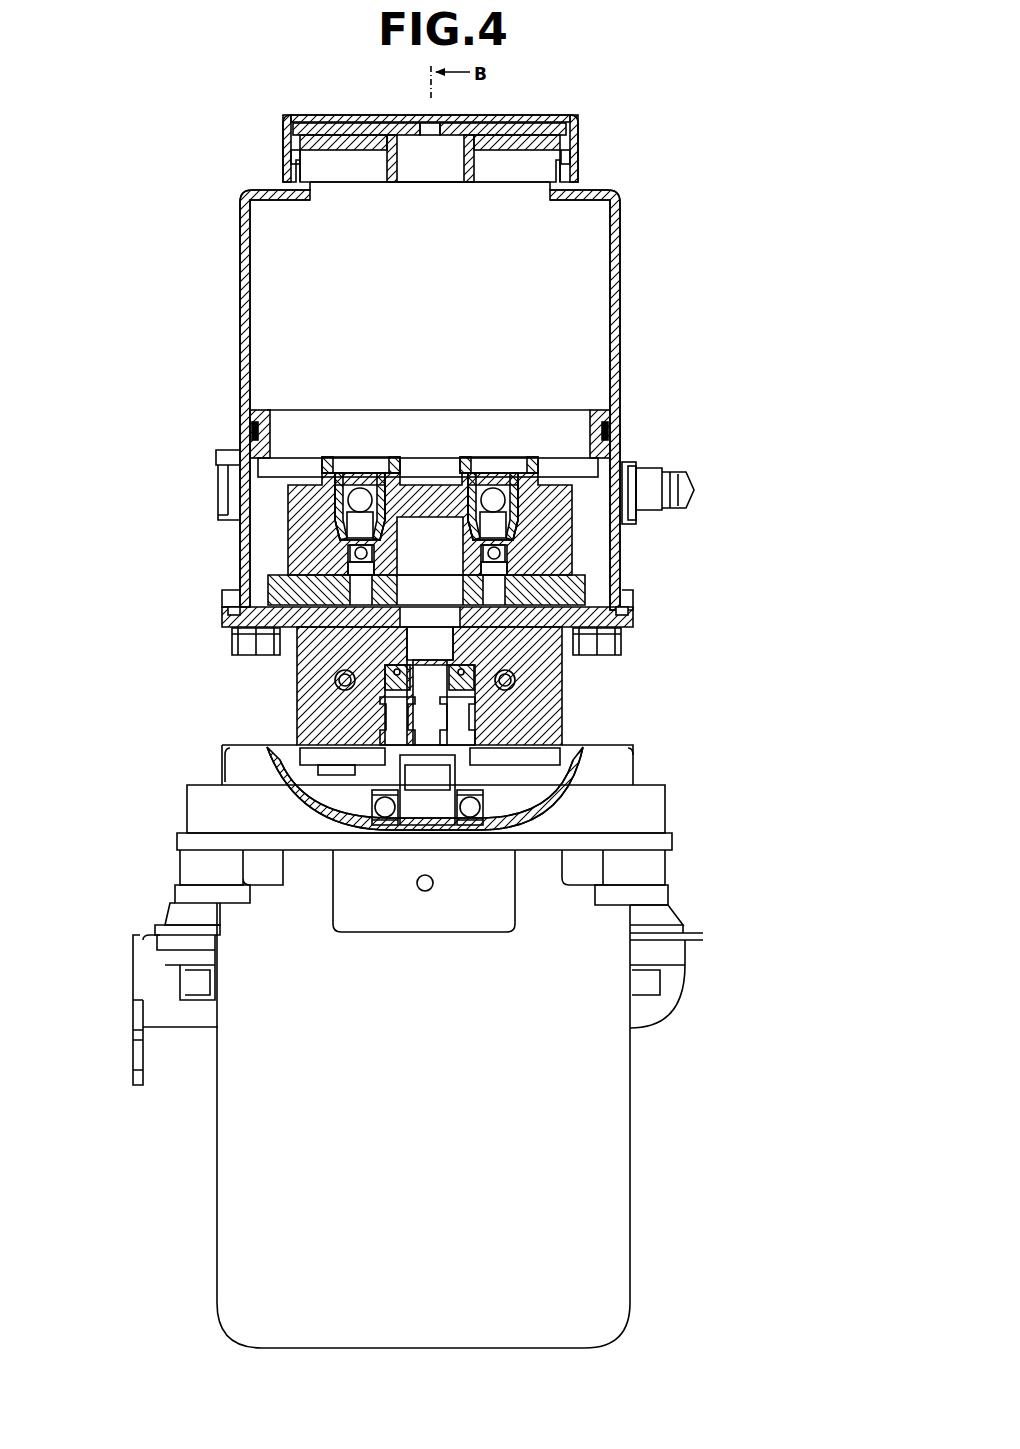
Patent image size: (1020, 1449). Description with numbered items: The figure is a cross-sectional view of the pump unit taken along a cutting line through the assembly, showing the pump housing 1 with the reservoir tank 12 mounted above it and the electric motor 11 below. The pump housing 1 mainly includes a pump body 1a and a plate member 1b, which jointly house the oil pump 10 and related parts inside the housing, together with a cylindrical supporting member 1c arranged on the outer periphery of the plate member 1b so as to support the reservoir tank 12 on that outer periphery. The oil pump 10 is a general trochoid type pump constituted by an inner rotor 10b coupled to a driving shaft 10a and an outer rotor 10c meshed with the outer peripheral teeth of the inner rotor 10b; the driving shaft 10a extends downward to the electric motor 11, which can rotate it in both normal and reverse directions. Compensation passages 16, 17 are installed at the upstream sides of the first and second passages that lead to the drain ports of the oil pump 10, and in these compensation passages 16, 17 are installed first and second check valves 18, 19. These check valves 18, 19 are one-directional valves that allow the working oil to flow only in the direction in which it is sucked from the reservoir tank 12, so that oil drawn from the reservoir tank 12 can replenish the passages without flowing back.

The pump housing 1 is at (449, 602).
The pump body 1a is at (545, 718).
The plate member 1b is at (300, 510).
The cylindrical supporting member 1c is at (612, 460).
The oil pump 10 is at (596, 598).
The driving shaft 10a is at (413, 637).
The inner rotor 10b is at (470, 628).
The outer rotor 10c is at (585, 580).
The electric motor 11 is at (632, 1092).
The reservoir tank 12 is at (622, 291).
The compensation passage 16 is at (648, 468).
The compensation passage 17 is at (360, 560).
The first check valve 18 is at (495, 500).
The second check valve 19 is at (358, 500).